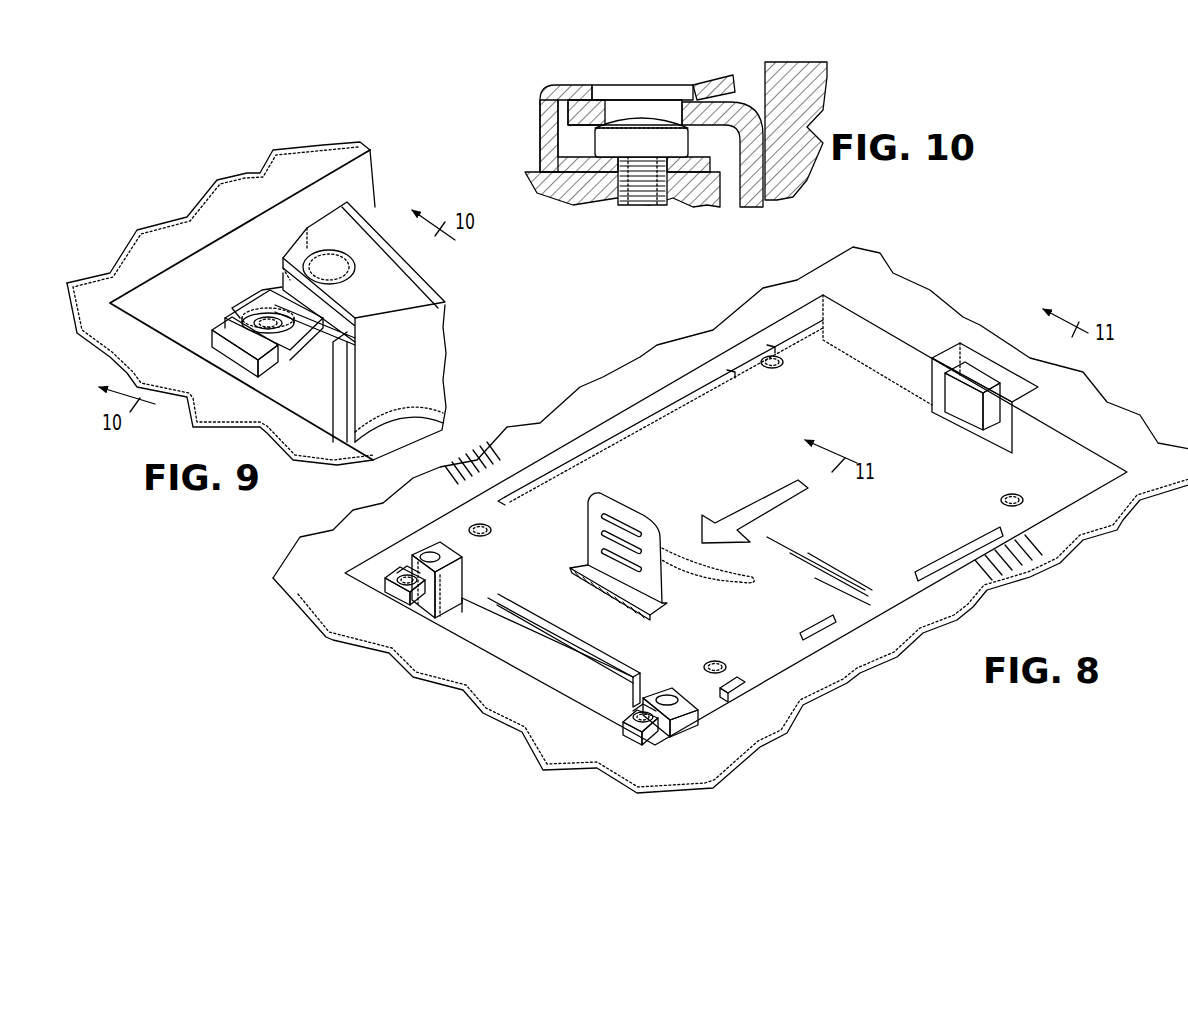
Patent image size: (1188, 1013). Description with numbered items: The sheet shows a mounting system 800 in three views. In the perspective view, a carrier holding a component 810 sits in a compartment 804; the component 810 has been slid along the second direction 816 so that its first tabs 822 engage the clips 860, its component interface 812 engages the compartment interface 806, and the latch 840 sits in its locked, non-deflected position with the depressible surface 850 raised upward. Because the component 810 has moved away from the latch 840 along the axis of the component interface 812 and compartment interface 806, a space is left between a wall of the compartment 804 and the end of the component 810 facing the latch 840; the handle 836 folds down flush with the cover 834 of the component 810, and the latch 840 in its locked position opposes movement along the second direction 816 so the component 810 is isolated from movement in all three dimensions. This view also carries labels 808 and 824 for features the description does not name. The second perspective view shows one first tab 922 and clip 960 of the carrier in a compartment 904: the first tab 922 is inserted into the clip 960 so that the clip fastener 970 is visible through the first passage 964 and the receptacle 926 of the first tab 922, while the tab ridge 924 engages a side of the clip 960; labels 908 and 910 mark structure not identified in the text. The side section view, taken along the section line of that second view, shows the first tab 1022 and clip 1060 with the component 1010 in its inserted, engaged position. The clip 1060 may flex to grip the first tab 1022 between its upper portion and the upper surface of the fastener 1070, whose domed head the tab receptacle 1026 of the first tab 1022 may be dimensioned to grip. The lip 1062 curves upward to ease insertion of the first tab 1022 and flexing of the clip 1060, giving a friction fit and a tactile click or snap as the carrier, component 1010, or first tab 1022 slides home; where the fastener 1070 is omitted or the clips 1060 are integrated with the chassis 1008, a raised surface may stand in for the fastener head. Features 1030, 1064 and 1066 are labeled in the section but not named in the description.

In FIG. 8, the mounting system 800 is at (727, 485).
In FIG. 8, the compartment 804 is at (736, 514).
In FIG. 8, the compartment interface 806 is at (522, 637).
In FIG. 8, the chassis sheet 808 is at (730, 520).
In FIG. 8, the component 810 is at (755, 507).
In FIG. 8, the component interface 812 is at (564, 632).
In FIG. 8, the second direction 816 is at (755, 497).
In FIG. 8, the first tabs 822 is at (578, 639).
In FIG. 8, the fastener nut 824 is at (532, 641).
In FIG. 8, the cover 834 is at (634, 406).
In FIG. 8, the handle 836 is at (640, 556).
In FIG. 8, the latch 840 is at (985, 377).
In FIG. 8, the depressible surface 850 is at (960, 372).
In FIG. 8, the clips 860 is at (492, 662).
In FIG. 9, the compartment 904 is at (241, 305).
In FIG. 9, the chassis panel 908 is at (255, 303).
In FIG. 9, the mounting block 910 is at (378, 322).
In FIG. 9, the first tab 922 is at (342, 309).
In FIG. 9, the tab ridge 924 is at (243, 282).
In FIG. 9, the receptacle 926 is at (264, 286).
In FIG. 9, the clip 960 is at (217, 349).
In FIG. 9, the first passage 964 is at (242, 325).
In FIG. 9, the clip fastener 970 is at (307, 306).
In FIG. 10, the chassis 1008 is at (588, 178).
In FIG. 10, the component 1010 is at (825, 118).
In FIG. 10, the first tab 1022 is at (521, 136).
In FIG. 10, the tab receptacle 1026 is at (632, 79).
In FIG. 10, the bracket arm 1030 is at (722, 171).
In FIG. 10, the clip 1060 is at (612, 108).
In FIG. 10, the lip 1062 is at (720, 65).
In FIG. 10, the spacer bar 1064 is at (638, 66).
In FIG. 10, the threaded fastener 1066 is at (647, 199).
In FIG. 10, the fastener 1070 is at (641, 105).